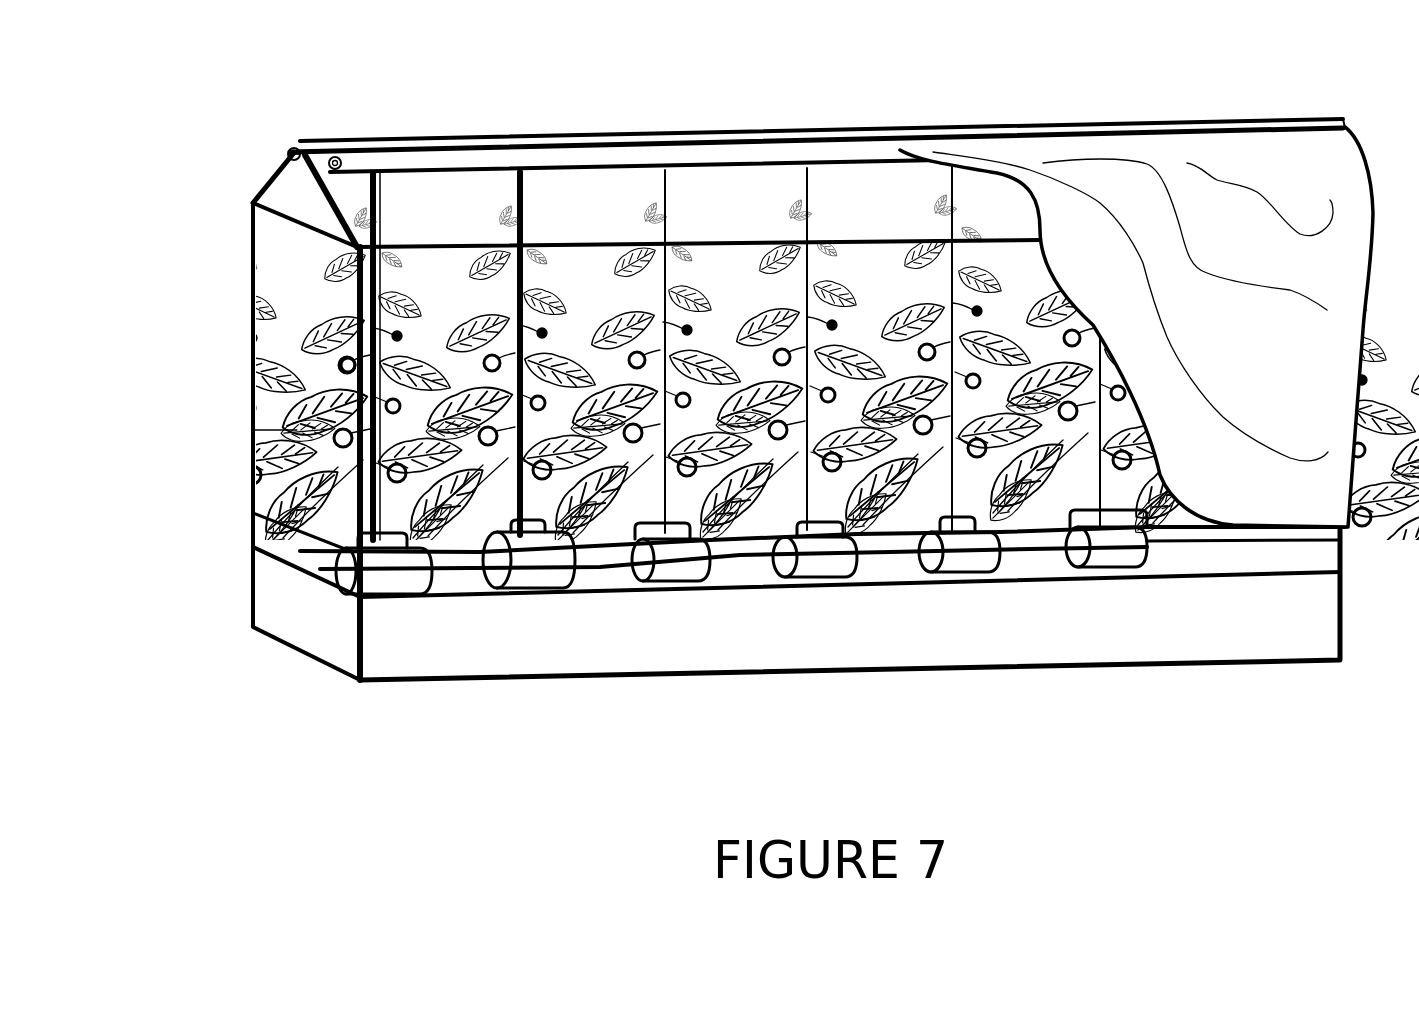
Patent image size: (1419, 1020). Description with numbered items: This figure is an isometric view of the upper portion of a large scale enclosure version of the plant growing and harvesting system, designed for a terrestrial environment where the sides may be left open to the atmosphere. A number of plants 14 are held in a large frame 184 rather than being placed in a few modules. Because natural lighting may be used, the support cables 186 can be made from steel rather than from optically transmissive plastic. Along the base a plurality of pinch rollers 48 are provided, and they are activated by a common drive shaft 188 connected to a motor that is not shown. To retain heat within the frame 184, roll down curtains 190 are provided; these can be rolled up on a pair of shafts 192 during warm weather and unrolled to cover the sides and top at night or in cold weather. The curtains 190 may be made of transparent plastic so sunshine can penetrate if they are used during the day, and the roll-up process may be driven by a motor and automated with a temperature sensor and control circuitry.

The plants 14 is at (337, 397).
The pinch rollers 48 is at (510, 593).
The large frame 184 is at (270, 188).
The support cables 186 is at (348, 368).
The common drive shaft 188 is at (453, 570).
The roll down curtains 190 is at (1173, 180).
The shafts 192 is at (288, 153).